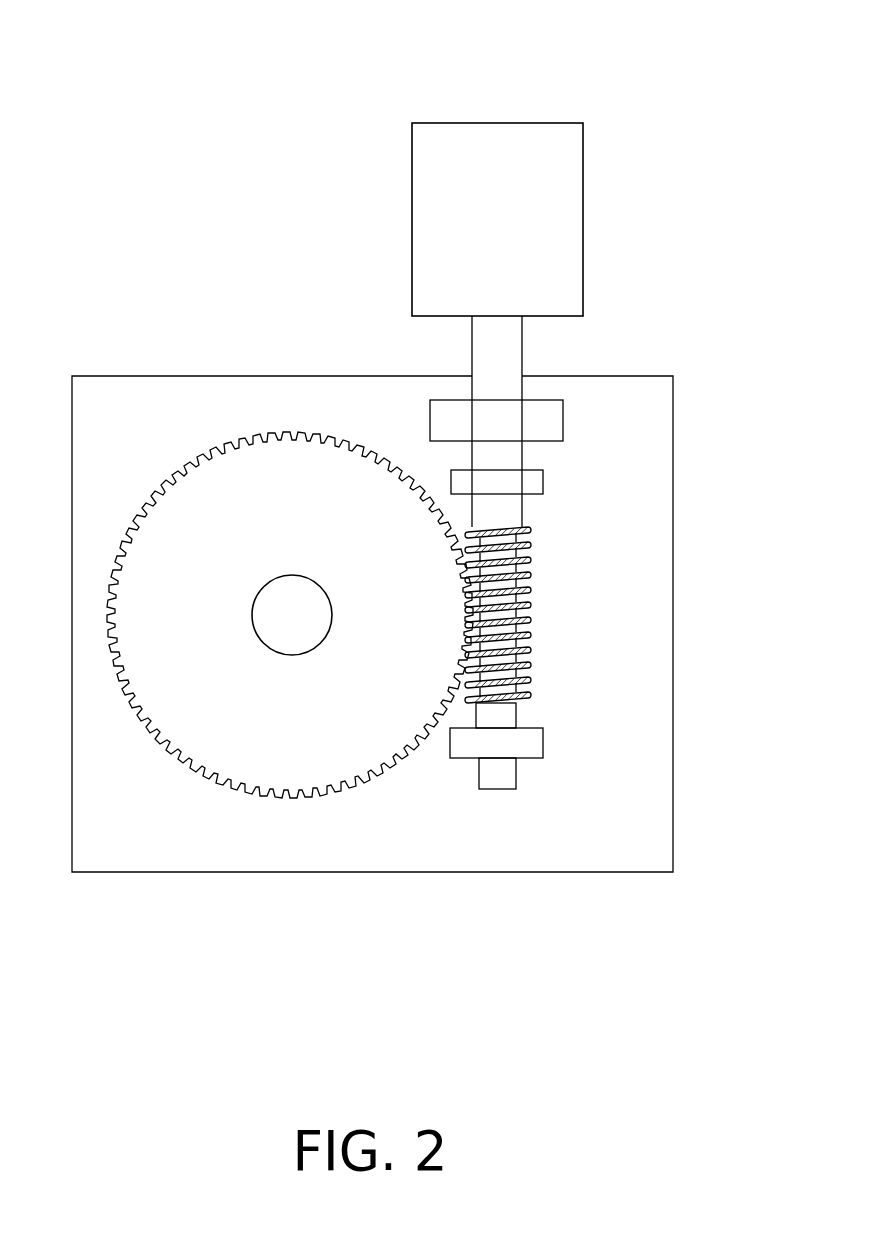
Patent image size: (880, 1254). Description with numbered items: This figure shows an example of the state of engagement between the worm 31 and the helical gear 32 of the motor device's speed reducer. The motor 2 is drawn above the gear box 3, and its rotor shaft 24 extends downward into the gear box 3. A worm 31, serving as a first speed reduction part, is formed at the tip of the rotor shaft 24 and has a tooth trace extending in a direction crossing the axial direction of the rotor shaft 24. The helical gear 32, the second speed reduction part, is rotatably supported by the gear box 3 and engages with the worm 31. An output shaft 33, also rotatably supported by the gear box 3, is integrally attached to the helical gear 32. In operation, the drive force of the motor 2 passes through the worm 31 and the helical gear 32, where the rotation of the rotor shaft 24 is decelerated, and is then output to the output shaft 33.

The motor 2 is at (535, 97).
The rotor shaft 24 is at (513, 349).
The gear box 3 is at (680, 459).
The worm 31 is at (546, 526).
The helical gear 32 is at (213, 447).
The output shaft 33 is at (297, 633).